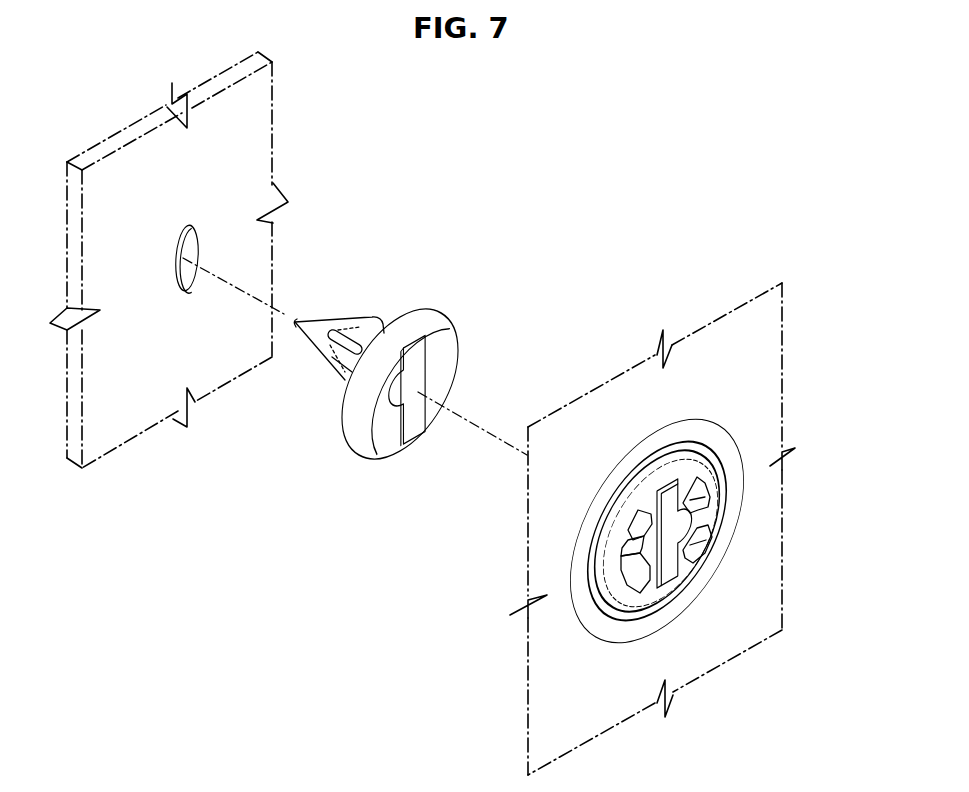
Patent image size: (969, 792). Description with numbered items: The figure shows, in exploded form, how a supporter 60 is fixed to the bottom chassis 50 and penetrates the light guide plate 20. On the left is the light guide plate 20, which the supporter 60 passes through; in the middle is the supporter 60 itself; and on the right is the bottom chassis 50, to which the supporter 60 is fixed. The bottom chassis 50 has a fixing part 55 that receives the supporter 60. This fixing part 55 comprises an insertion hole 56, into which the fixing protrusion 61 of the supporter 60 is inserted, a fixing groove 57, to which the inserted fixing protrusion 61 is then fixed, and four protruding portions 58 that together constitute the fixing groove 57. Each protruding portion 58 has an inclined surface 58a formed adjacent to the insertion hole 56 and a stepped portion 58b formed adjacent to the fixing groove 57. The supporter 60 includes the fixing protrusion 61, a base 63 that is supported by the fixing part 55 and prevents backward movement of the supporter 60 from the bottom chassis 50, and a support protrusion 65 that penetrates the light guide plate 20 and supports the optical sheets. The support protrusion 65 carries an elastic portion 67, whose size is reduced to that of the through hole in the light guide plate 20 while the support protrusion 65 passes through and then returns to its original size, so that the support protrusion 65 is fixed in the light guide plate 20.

The light guide plate 20 is at (282, 137).
The bottom chassis 50 is at (648, 529).
The fixing part 55 is at (542, 558).
The insertion hole 56 is at (640, 560).
The fixing groove 57 is at (636, 548).
The protruding portion 58 is at (632, 585).
The inclined surface 58a is at (695, 560).
The stepped portion 58b is at (710, 522).
The supporter 60 is at (394, 358).
The fixing protrusion 61 is at (416, 356).
The base 63 is at (406, 334).
The support protrusion 65 is at (300, 322).
The elastic portion 67 is at (357, 331).